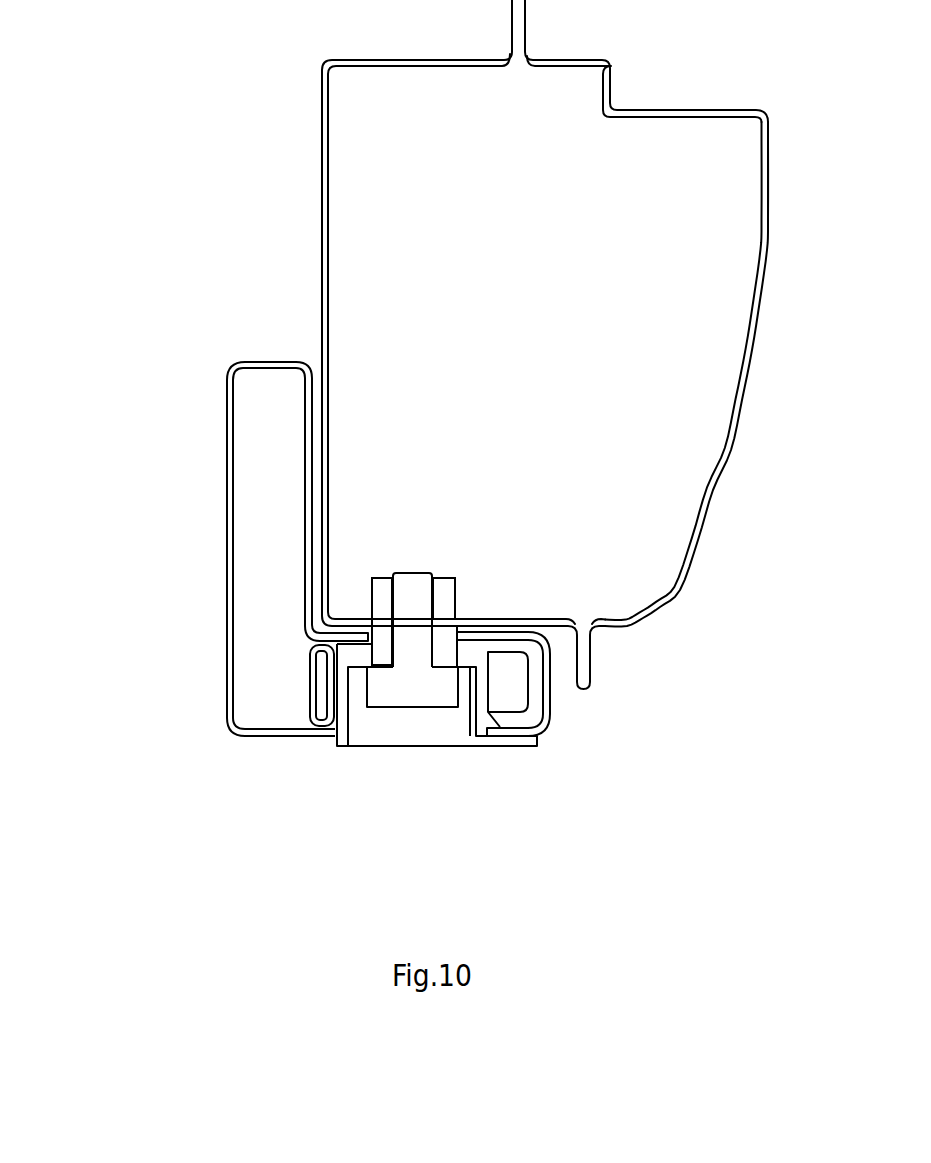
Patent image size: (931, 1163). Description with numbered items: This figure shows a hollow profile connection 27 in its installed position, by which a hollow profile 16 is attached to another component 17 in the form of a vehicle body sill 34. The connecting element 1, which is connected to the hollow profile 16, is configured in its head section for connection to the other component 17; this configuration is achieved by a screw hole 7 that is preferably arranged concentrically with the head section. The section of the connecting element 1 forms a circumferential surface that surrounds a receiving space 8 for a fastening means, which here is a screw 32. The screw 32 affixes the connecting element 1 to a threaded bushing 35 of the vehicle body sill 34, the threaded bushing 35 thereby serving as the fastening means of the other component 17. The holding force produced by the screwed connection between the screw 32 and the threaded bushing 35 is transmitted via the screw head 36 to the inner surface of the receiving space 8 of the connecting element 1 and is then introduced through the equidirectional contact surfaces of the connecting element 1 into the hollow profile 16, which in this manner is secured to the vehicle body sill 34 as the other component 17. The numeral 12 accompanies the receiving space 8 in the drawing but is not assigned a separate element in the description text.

The connecting element 1 is at (350, 716).
The screw hole 7 is at (383, 624).
The receiving space 8 is at (380, 728).
The support 12 is at (437, 695).
The hollow profile 16 is at (197, 572).
The other component 17 is at (682, 108).
The hollow profile connection 27 is at (562, 723).
The screw 32 is at (409, 578).
The vehicle body sill 34 is at (545, 338).
The threaded bushing 35 is at (443, 601).
The screw head 36 is at (422, 688).